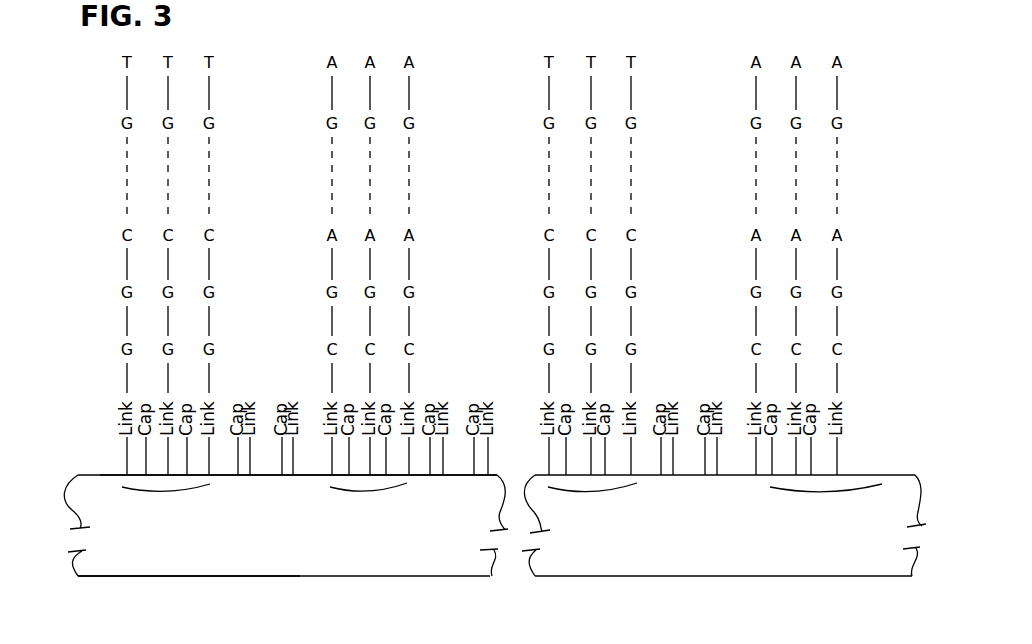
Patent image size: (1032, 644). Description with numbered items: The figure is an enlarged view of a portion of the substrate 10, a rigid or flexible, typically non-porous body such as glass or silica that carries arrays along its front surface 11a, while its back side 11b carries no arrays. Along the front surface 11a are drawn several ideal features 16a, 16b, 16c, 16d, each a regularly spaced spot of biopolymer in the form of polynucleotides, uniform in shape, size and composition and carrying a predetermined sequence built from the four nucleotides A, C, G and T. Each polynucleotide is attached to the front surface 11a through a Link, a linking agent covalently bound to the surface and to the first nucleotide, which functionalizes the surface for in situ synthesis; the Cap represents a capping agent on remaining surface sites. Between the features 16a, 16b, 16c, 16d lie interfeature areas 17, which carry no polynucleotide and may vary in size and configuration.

The substrate 10 is at (569, 563).
The front surface 11a is at (100, 475).
The back side 11b is at (145, 576).
The feature 16a is at (167, 498).
The feature 16b is at (376, 497).
The feature 16c is at (585, 495).
The feature 16d is at (812, 497).
The interfeature area 17 is at (270, 483).